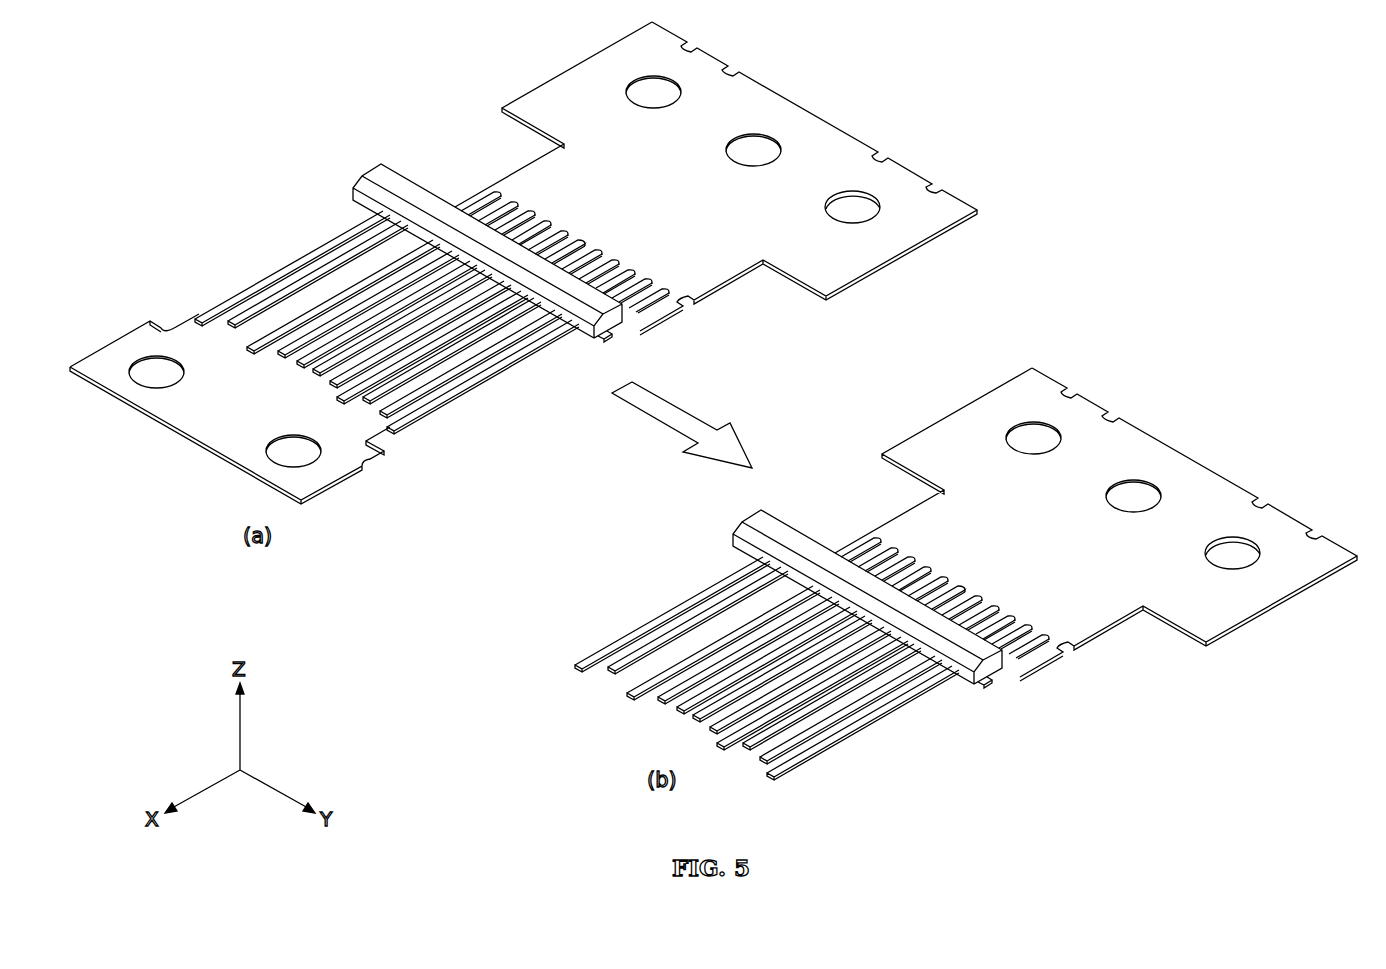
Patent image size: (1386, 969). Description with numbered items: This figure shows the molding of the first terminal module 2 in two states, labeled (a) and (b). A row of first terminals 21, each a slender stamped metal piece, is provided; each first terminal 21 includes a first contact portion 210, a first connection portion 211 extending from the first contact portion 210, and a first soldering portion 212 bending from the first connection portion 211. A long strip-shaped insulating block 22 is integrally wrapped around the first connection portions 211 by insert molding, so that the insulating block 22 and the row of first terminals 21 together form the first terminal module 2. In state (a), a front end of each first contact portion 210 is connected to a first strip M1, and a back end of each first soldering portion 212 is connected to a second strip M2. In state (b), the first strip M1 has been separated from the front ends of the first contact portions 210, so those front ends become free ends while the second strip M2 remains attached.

The first terminal module 2 is at (640, 449).
The first terminal 21 is at (640, 486).
The insulating block 22 is at (397, 183).
The first contact portion 210 is at (425, 400).
The first connection portion 211 is at (518, 345).
The first soldering portion 212 is at (627, 327).
The first strip M1 is at (330, 467).
The second strip M2 is at (873, 250).